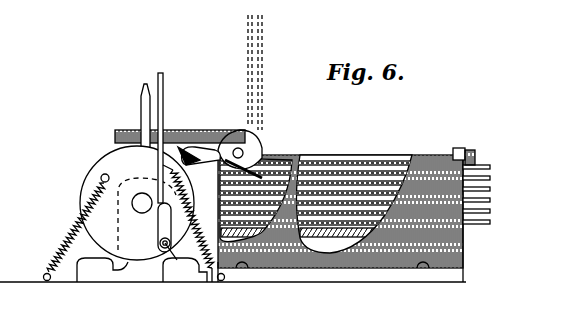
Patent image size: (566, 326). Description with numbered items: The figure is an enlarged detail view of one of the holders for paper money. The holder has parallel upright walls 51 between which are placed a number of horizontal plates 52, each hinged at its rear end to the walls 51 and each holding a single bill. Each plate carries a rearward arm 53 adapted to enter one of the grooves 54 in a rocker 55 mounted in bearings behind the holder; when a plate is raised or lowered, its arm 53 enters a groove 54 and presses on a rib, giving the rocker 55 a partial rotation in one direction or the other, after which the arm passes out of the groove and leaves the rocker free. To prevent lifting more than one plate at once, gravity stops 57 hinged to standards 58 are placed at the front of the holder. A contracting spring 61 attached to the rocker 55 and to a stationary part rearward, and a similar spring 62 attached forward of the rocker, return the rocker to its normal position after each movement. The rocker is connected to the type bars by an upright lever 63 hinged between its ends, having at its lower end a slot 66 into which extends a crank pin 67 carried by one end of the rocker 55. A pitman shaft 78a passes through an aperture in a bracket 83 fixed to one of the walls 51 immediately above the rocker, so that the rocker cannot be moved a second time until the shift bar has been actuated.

The upright walls 51 is at (300, 155).
The horizontal plates 52 is at (373, 180).
The rearward arm 53 is at (197, 150).
The grooves 54 is at (176, 147).
The rocker 55 is at (130, 252).
The gravity stops 57 is at (478, 162).
The standards 58 is at (461, 148).
The contracting spring 61 is at (70, 226).
The spring 62 is at (211, 275).
The upright lever 63 is at (163, 92).
The slot 66 is at (148, 215).
The crank pin 67 is at (168, 248).
The pitman shaft 78a is at (142, 103).
The bracket 83 is at (115, 136).